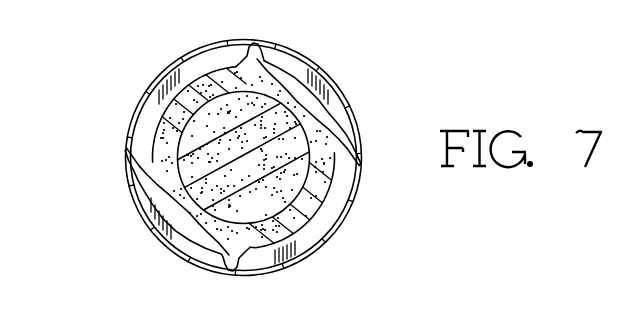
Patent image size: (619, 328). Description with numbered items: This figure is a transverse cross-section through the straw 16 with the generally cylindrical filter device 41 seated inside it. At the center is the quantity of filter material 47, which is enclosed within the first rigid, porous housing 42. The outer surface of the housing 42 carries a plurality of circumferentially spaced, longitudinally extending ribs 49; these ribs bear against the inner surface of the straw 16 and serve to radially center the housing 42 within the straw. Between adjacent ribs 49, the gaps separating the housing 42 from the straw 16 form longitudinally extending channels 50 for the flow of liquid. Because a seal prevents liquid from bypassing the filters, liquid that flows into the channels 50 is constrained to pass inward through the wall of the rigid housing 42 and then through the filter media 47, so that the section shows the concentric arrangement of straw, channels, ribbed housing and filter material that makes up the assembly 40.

The straw 16 is at (349, 107).
The catheter shaft assembly 40 is at (404, 199).
The filter device 41 is at (311, 237).
The rigid, porous housing 42 is at (162, 121).
The filter material 47 is at (272, 128).
The ribs 49 is at (142, 156).
The channels 50 is at (162, 76).